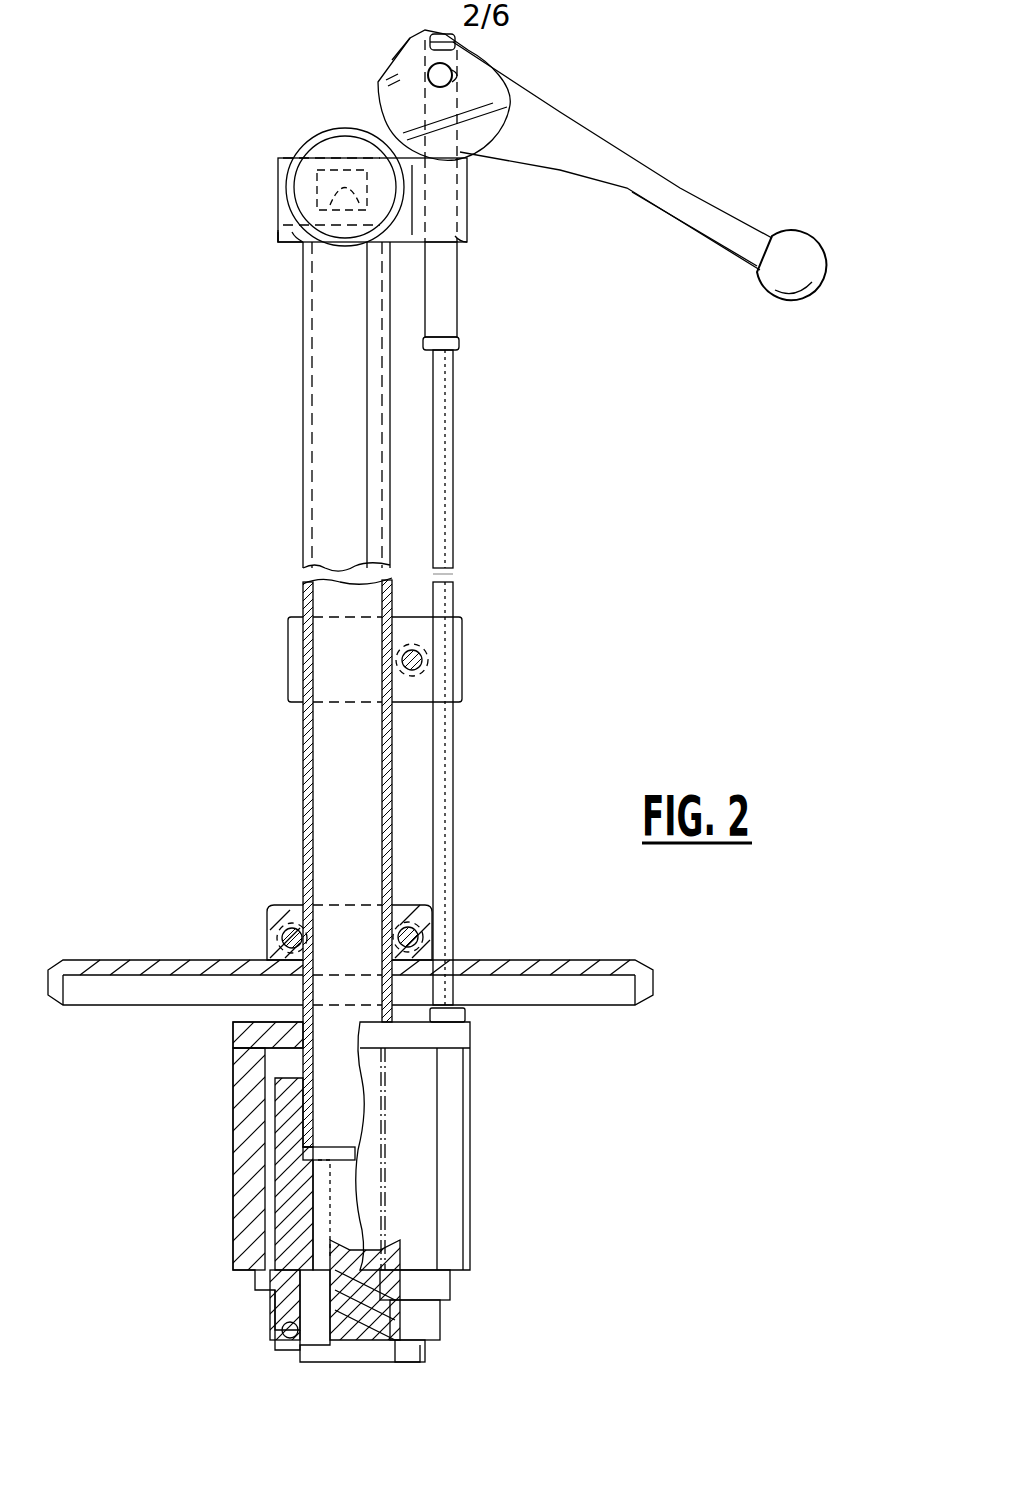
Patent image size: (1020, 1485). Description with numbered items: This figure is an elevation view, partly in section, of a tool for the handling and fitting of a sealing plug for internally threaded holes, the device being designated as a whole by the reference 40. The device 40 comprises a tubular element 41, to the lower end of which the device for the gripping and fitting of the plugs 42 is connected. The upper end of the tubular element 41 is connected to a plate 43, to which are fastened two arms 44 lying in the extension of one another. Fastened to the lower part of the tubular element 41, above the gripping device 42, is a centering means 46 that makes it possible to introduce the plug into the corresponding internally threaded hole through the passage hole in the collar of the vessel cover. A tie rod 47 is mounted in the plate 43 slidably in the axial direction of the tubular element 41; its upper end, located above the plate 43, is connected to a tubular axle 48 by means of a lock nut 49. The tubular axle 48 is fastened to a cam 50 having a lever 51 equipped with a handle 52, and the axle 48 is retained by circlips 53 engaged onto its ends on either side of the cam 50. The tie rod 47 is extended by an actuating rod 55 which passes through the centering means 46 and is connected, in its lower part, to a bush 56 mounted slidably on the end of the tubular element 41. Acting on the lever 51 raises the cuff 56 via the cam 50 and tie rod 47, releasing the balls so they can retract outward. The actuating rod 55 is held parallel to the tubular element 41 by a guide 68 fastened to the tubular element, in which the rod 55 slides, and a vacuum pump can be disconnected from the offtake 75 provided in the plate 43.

The device 40 is at (468, 572).
The tubular element 41 is at (305, 530).
The device for the gripping and fitting of the plugs 42 is at (480, 1122).
The plate 43 is at (412, 215).
The arms 44 is at (290, 237).
The centering means 46 is at (568, 960).
The tie rod 47 is at (448, 305).
The tubular axle 48 is at (402, 72).
The lock nut 49 is at (452, 40).
The cam 50 is at (392, 102).
The lever 51 is at (718, 215).
The handle 52 is at (805, 262).
The circlips 53 is at (505, 98).
The actuating rod 55 is at (448, 483).
The bush 56 is at (255, 1097).
The guide 68 is at (425, 692).
The offtake 75 is at (308, 165).